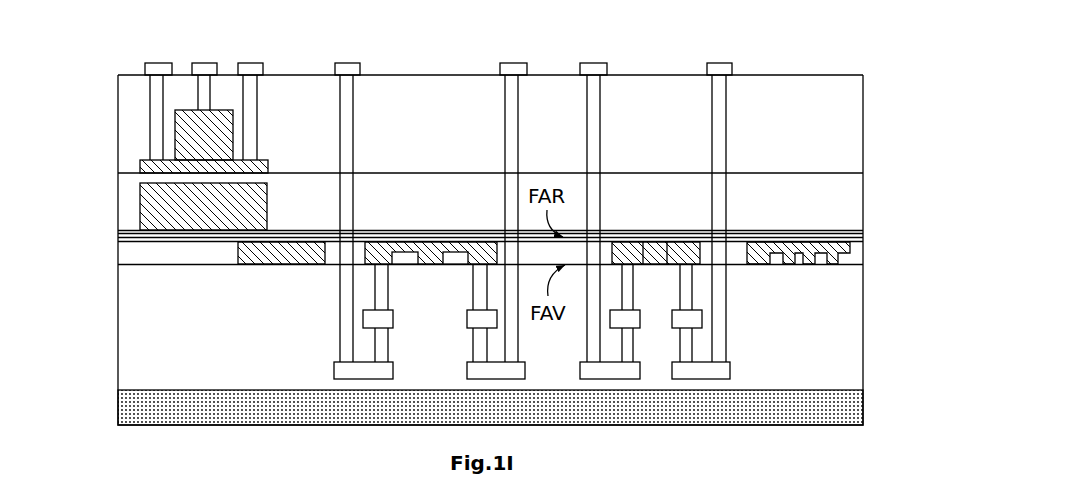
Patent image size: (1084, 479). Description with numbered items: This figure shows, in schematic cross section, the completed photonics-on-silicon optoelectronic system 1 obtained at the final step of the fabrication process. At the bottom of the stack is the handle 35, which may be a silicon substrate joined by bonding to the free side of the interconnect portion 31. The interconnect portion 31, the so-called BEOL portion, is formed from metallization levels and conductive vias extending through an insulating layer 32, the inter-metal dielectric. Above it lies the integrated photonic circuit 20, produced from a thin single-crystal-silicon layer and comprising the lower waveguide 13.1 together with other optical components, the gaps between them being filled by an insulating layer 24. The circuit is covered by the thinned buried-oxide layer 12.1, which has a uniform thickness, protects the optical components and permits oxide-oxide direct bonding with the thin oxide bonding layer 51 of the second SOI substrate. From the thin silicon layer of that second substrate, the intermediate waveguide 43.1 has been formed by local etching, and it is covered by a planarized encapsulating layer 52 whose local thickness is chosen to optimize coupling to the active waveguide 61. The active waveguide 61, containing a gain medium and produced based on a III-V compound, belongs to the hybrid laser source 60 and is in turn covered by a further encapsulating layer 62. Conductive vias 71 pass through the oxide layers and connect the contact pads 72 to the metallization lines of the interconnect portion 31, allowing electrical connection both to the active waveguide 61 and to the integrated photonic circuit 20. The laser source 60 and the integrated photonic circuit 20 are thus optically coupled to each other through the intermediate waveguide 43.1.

The optoelectronic system 1 is at (87, 95).
The laser source 60 is at (108, 140).
The active waveguide 61 is at (236, 136).
The intermediate waveguide 43.1 is at (138, 208).
The lower waveguide 13.1 is at (302, 233).
The integrated photonic circuit 20 is at (108, 250).
The interconnect portion 31 is at (107, 326).
The contact pads 72 is at (708, 70).
The conductive vias 71 is at (712, 145).
The encapsulating layer 62 is at (865, 124).
The encapsulating layer 52 is at (865, 197).
The thin oxide bonding layer 51 is at (865, 231).
The thinned buried-oxide layer 12.1 is at (865, 238).
The insulating layer 24 is at (865, 252).
The insulating layer 32 is at (865, 325).
The handle 35 is at (865, 408).